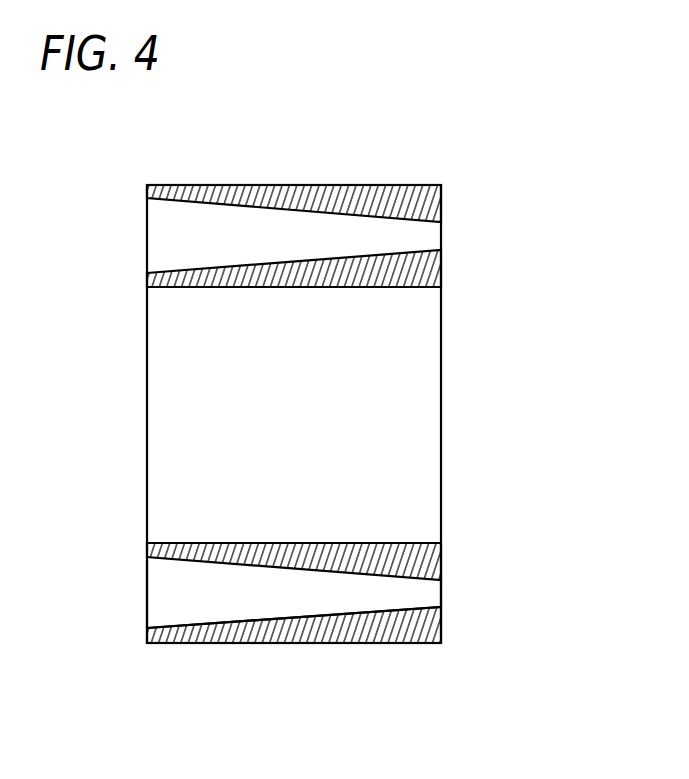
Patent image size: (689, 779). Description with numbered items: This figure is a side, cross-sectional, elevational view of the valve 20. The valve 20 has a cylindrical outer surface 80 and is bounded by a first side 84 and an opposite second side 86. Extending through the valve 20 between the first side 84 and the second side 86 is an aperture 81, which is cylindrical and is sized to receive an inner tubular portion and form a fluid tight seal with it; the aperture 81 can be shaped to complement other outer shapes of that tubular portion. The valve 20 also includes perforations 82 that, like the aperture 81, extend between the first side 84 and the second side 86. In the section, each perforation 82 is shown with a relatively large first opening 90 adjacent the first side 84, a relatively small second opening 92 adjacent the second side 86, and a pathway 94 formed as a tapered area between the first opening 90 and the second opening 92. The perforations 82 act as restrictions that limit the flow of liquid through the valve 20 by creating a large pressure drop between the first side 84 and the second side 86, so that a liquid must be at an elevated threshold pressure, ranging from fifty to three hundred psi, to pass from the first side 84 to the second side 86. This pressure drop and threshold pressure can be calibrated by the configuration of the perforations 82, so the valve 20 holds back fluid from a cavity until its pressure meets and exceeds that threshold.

The valve 20 is at (335, 668).
The cylindrical outer surface 80 is at (408, 645).
The aperture 81 is at (285, 543).
The perforations 82 is at (267, 620).
The first side 84 is at (147, 487).
The second side 86 is at (441, 447).
The first opening 90 is at (147, 592).
The second opening 92 is at (441, 588).
The pathway 94 is at (240, 625).